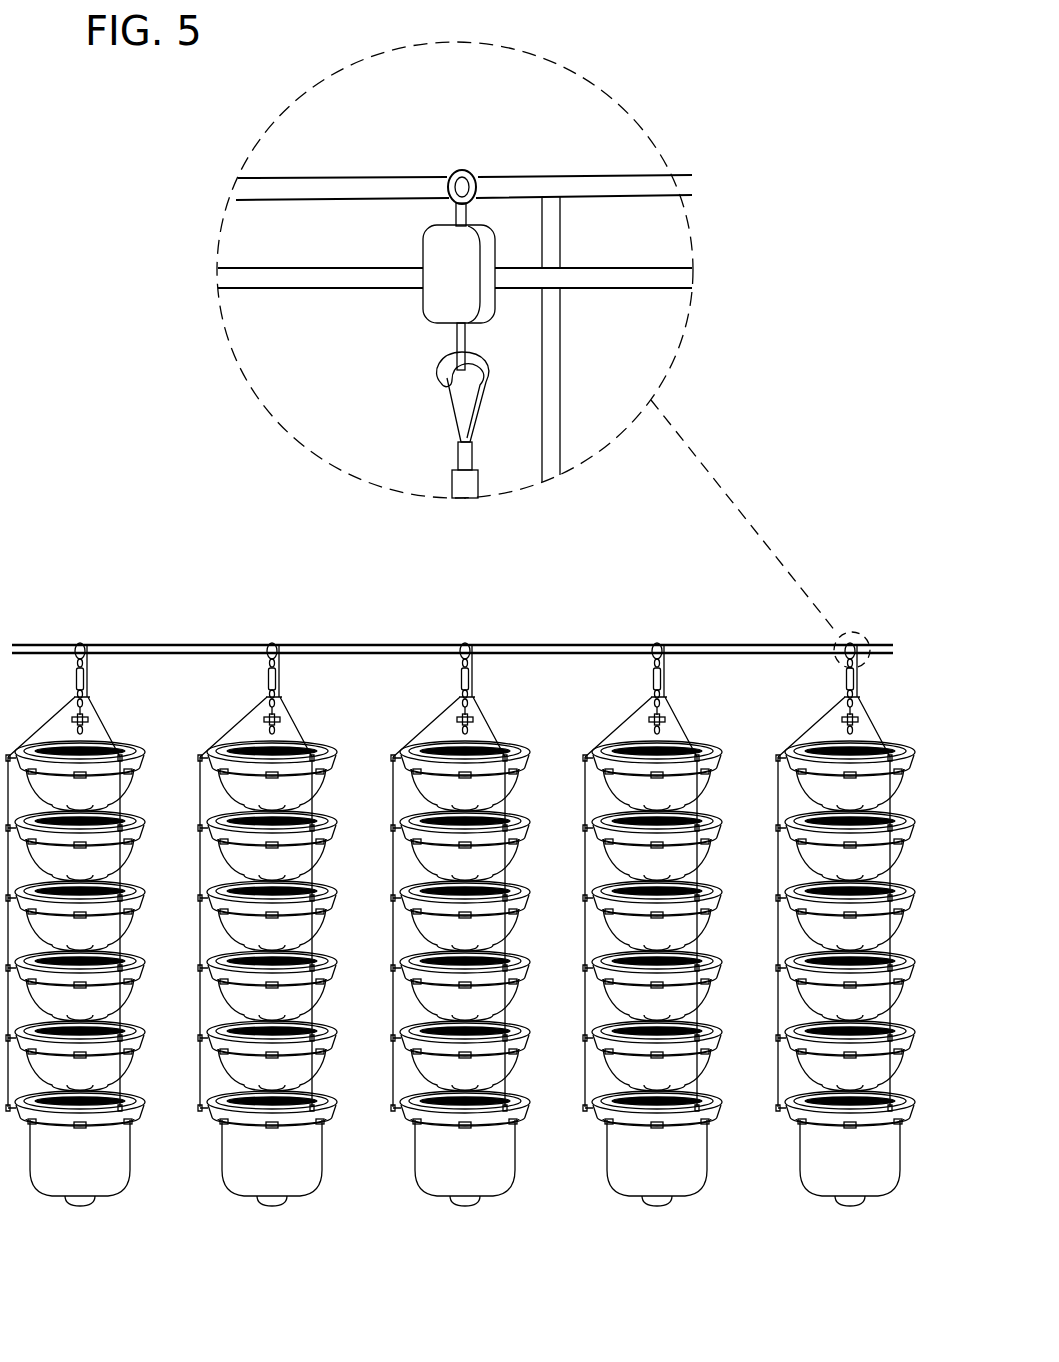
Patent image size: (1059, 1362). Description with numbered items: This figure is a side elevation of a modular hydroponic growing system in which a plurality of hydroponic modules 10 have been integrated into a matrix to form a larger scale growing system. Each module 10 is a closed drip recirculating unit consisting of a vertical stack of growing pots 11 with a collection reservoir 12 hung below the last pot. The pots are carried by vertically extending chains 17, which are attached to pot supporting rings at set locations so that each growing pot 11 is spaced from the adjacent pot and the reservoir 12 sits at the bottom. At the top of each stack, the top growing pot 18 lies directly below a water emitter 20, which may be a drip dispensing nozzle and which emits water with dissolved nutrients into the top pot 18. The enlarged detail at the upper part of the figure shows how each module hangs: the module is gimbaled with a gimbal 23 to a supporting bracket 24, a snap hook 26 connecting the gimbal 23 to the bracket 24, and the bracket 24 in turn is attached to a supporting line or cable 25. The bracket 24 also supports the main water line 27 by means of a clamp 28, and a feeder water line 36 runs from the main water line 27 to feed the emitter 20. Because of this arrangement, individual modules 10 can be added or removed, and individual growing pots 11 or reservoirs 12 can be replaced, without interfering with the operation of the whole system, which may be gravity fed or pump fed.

The hydroponic system 10 is at (245, 924).
The growing pot 11 is at (128, 925).
The collection reservoir 12 is at (115, 1150).
The chain 17 is at (228, 933).
The top growing pot 18 is at (297, 776).
The water emitter 20 is at (202, 700).
The gimbal 23 is at (467, 487).
The supporting bracket 24 is at (423, 241).
The supporting cable 25 is at (323, 290).
The snap hook 26 is at (442, 373).
The main water line 27 is at (376, 176).
The clamp 28 is at (460, 170).
The feeder water line 36 is at (560, 338).